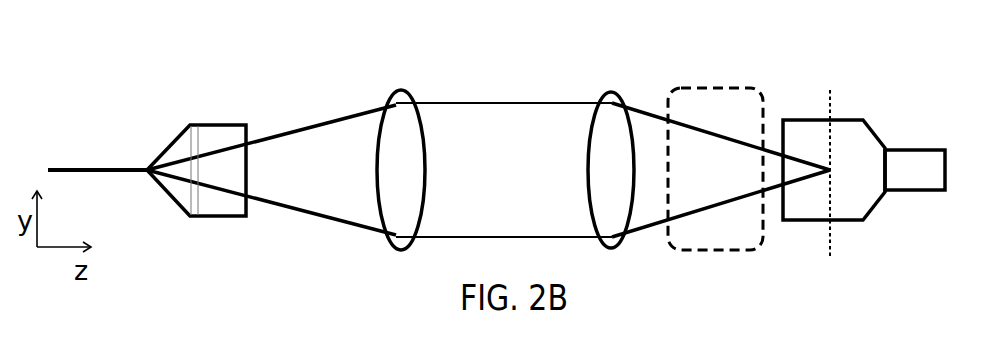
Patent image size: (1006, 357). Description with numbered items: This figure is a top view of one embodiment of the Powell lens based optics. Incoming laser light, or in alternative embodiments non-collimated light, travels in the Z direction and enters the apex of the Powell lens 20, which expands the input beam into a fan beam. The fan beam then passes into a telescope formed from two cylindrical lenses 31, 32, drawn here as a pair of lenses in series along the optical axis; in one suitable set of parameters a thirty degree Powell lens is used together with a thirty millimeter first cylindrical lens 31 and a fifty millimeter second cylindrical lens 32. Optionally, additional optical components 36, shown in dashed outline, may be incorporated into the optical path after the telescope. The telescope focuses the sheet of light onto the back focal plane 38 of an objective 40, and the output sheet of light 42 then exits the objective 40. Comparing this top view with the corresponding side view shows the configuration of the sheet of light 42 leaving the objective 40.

The Powell lens 20 is at (215, 125).
The first cylindrical lens 31 is at (407, 98).
The second cylindrical lens 32 is at (613, 92).
The additional optical components 36 is at (733, 88).
The back focal plane 38 is at (832, 92).
The objective 40 is at (877, 130).
The output sheet of light 42 is at (915, 150).